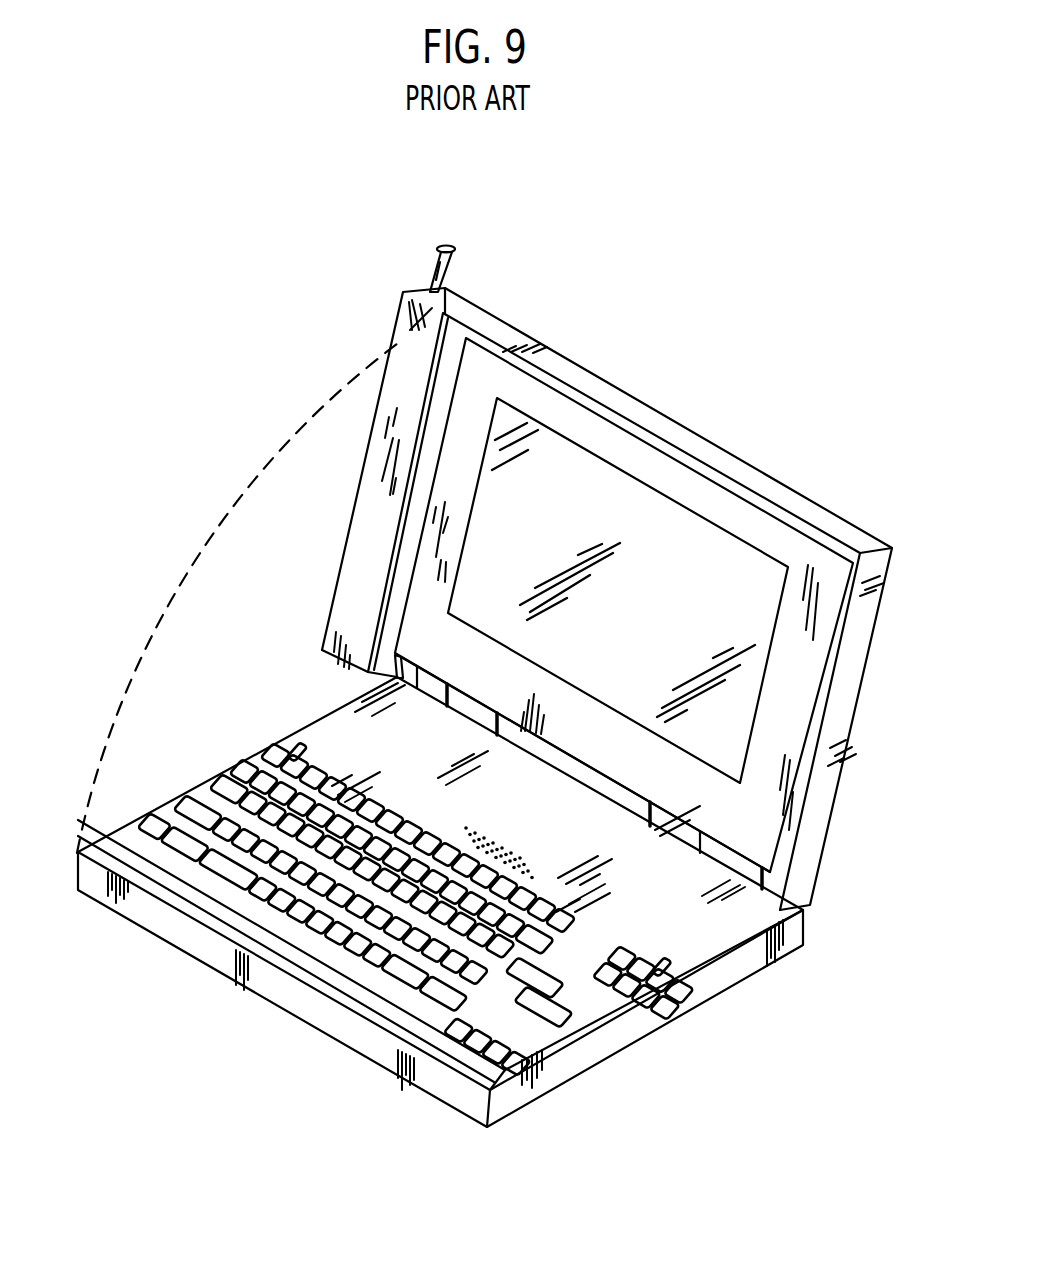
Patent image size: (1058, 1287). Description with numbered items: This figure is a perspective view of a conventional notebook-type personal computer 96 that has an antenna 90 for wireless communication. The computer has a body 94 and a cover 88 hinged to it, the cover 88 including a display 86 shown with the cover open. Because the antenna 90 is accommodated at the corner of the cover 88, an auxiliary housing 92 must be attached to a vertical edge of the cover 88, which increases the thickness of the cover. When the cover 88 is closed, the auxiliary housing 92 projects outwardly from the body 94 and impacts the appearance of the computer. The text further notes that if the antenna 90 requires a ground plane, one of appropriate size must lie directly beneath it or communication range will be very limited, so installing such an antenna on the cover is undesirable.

The display 86 is at (667, 555).
The cover 88 is at (790, 730).
The antenna 90 is at (448, 270).
The auxiliary housing 92 is at (407, 370).
The body 94 is at (693, 902).
The personal computer 96 is at (591, 546).